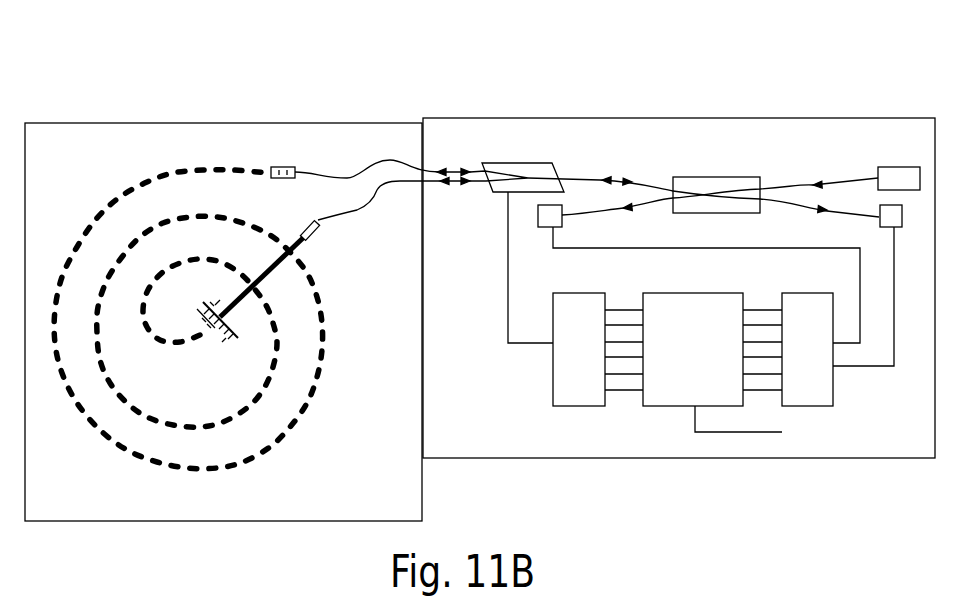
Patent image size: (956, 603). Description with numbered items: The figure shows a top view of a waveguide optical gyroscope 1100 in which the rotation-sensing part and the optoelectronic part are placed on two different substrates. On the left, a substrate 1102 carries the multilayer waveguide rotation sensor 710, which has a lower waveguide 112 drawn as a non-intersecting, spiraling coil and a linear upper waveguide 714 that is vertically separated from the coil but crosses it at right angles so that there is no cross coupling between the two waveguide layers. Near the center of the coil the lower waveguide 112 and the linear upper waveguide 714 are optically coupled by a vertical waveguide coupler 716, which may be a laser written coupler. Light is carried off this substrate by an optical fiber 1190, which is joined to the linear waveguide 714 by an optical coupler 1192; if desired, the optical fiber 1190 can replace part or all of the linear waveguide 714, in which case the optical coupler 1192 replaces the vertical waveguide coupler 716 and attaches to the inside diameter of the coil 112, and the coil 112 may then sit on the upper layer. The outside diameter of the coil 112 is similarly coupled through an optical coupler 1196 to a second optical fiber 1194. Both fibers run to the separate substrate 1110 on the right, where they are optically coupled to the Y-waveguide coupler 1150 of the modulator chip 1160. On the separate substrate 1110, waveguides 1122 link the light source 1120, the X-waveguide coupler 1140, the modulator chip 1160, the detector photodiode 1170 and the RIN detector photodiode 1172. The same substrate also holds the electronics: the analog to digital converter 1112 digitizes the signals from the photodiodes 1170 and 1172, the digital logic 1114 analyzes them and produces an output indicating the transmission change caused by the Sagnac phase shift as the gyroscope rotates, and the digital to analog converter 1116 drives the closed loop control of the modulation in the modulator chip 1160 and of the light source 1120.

The waveguide optical gyroscope 1100 is at (128, 60).
The substrate 1102 is at (395, 122).
The multilayer waveguide rotation sensor 710 is at (103, 176).
The lower waveguide 112 is at (104, 210).
The linear upper waveguide 714 is at (290, 243).
The vertical waveguide coupler 716 is at (223, 342).
The optical coupler 1192 is at (308, 238).
The optical coupler 1196 is at (283, 166).
The optical fiber 1194 is at (325, 176).
The optical fiber 1190 is at (350, 217).
The separate substrate 1110 is at (657, 458).
The Y-waveguide coupler 1150 is at (518, 176).
The modulator chip 1160 is at (550, 163).
The waveguides 1122 is at (793, 187).
The X-waveguide coupler 1140 is at (717, 177).
The light source 1120 is at (913, 167).
The detector 1170 is at (879, 218).
The RIN detector 1172 is at (545, 228).
The digital to analog (D/A) converter 1116 is at (552, 389).
The digital logic 1114 is at (666, 407).
The analog to digital (A/D) converter 1112 is at (833, 387).